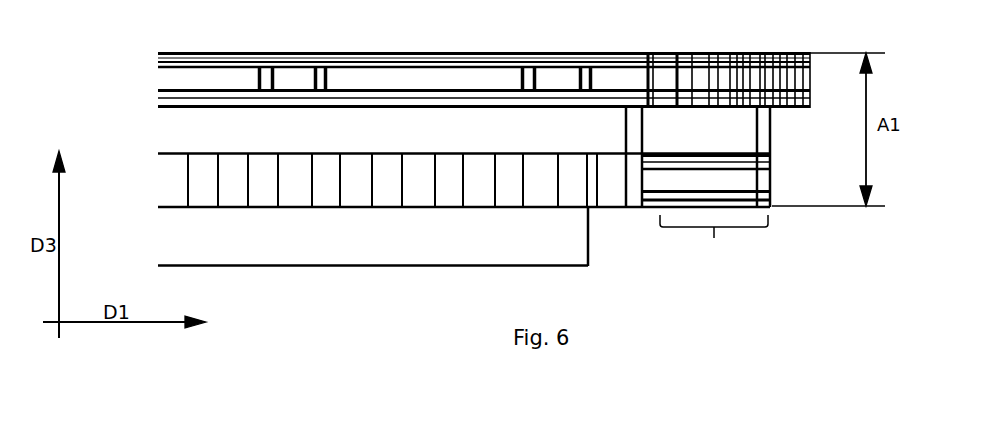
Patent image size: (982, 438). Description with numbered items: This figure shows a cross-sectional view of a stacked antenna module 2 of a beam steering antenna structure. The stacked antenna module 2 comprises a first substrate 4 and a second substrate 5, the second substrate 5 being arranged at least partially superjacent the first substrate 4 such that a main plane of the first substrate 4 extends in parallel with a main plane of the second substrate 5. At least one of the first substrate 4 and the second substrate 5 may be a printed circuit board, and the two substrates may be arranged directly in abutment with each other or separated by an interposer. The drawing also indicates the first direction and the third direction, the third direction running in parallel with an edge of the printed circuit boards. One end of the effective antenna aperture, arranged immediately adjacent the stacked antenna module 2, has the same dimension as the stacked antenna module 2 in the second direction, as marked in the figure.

The stacked antenna module 2 is at (369, 305).
The first substrate 4 is at (198, 177).
The second substrate 5 is at (198, 78).